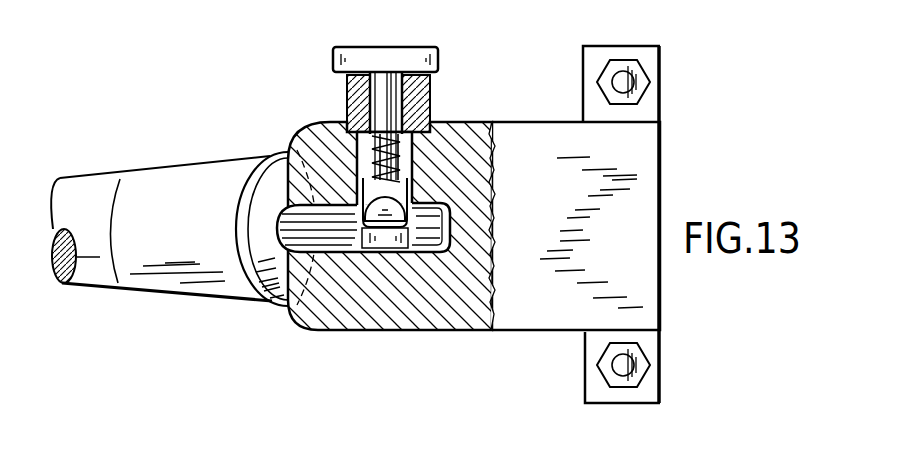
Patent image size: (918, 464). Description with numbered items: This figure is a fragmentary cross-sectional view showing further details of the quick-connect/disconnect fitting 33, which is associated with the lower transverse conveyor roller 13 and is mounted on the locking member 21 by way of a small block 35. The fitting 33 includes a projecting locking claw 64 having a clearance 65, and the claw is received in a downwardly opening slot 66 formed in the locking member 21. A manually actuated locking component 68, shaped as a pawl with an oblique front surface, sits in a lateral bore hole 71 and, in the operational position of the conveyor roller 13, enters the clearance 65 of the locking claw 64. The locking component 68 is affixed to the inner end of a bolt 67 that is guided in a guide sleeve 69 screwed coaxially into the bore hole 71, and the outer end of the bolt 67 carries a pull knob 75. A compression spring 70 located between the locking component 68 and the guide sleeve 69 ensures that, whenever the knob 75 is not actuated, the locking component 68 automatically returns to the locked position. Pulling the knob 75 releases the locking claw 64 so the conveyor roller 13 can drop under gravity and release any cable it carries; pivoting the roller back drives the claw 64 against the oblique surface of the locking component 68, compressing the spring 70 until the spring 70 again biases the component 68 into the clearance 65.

The lower transverse conveyor roller 13 is at (183, 164).
The locking member 21 is at (650, 166).
The quick-connect/disconnect fitting 33 is at (416, 44).
The small block 35 is at (650, 67).
The locking claw 64 is at (342, 233).
The clearance 65 is at (386, 240).
The downwardly opening slot 66 is at (448, 233).
The bolt 67 is at (383, 103).
The locking component 68 is at (393, 192).
The guide sleeve 69 is at (425, 87).
The compression spring 70 is at (368, 165).
The lateral bore hole 71 is at (412, 162).
The pull knob 75 is at (373, 60).